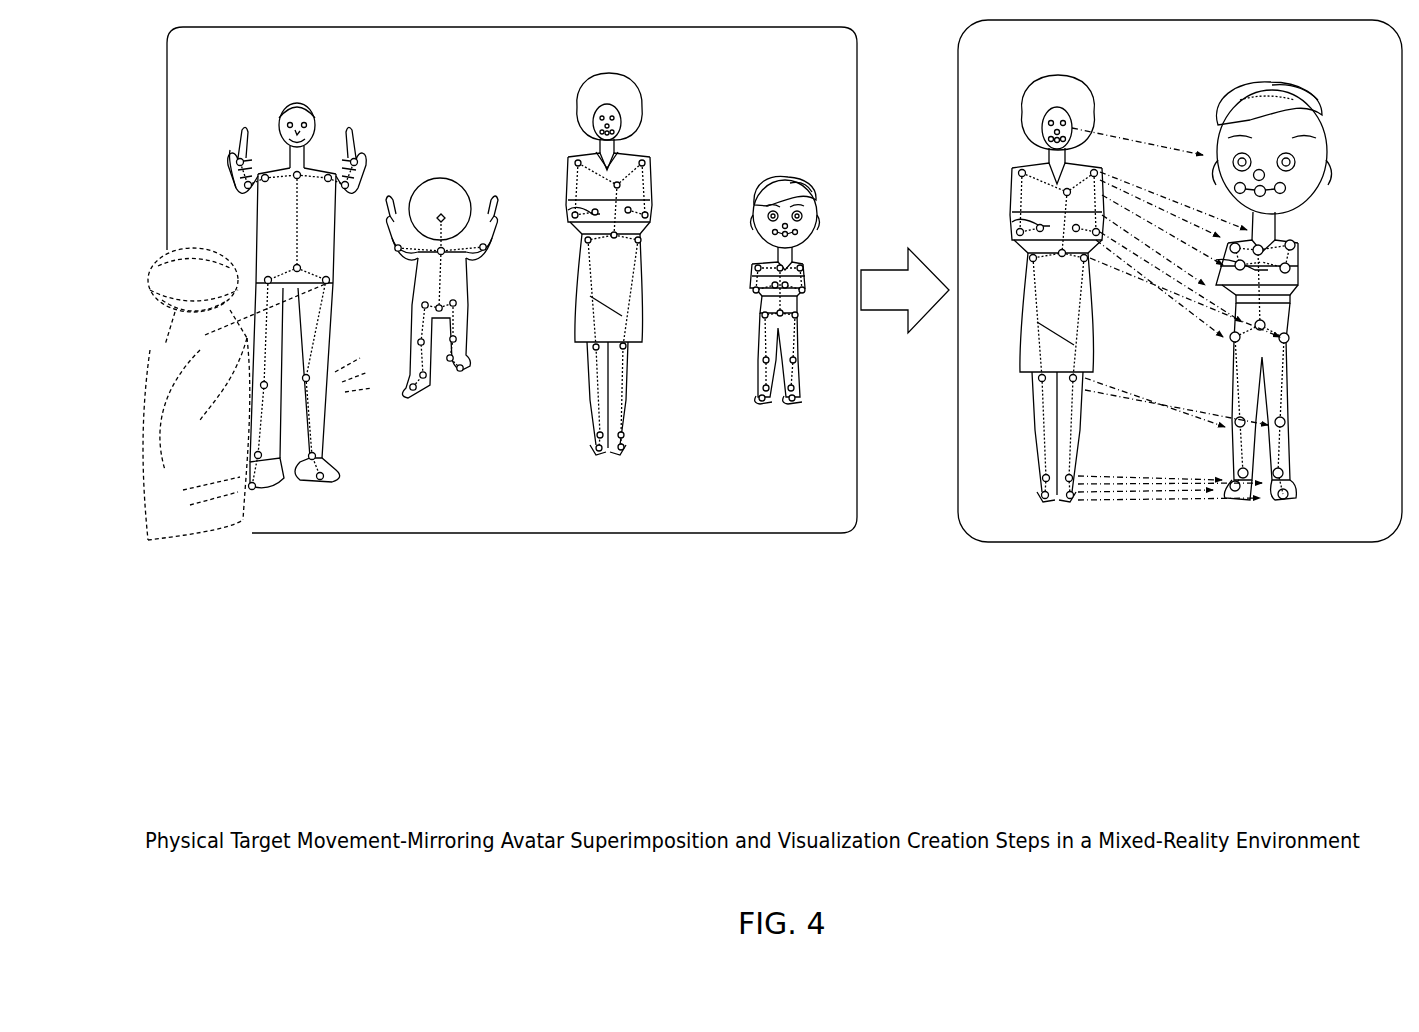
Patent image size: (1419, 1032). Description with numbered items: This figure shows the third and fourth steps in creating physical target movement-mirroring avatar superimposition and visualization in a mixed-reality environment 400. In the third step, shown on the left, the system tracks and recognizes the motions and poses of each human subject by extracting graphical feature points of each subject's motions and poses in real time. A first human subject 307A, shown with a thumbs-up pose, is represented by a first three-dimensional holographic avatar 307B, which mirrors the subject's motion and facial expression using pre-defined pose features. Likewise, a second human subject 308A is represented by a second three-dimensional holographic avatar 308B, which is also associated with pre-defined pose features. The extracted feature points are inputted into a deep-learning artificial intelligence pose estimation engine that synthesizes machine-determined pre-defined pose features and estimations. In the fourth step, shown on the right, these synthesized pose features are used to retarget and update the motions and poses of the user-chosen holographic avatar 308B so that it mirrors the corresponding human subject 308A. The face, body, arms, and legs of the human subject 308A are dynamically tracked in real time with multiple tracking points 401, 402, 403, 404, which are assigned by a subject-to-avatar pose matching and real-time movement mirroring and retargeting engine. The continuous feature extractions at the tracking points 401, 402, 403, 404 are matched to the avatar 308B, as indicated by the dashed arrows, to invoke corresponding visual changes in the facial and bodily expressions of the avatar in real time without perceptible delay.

The mixed-reality environment 400 is at (800, 770).
The first human subject 307A is at (306, 292).
The first 3D holographic avatar 307B is at (442, 303).
The second human subject 308A is at (835, 272).
The second 3D holographic avatar 308B is at (1026, 276).
The tracking point 401 is at (1137, 136).
The tracking point 402 is at (1185, 254).
The tracking point 403 is at (1176, 409).
The tracking point 404 is at (1170, 505).